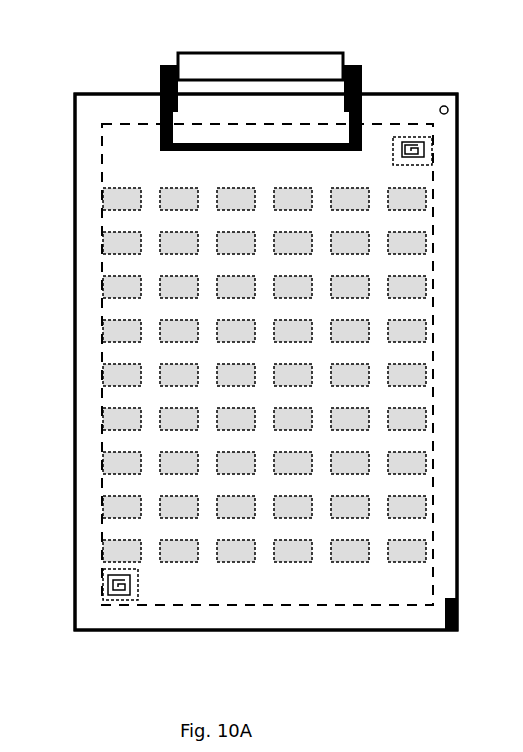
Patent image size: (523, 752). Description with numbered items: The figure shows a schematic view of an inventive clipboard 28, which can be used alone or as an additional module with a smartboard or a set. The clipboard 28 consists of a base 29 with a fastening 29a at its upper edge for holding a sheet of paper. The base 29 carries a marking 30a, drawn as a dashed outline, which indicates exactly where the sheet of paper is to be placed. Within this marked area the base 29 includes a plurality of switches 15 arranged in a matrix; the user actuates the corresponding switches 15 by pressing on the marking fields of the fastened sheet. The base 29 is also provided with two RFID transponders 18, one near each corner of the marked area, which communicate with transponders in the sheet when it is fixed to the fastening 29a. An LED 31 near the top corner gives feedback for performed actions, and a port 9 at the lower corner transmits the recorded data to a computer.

The clipboard 28 is at (116, 72).
The base 29 is at (105, 618).
The fastening 29a is at (270, 146).
The marking 30a is at (220, 605).
The switches 15 is at (120, 330).
The RFID transponder 18 is at (414, 150).
The LED 31 is at (446, 106).
The port 9 is at (460, 626).